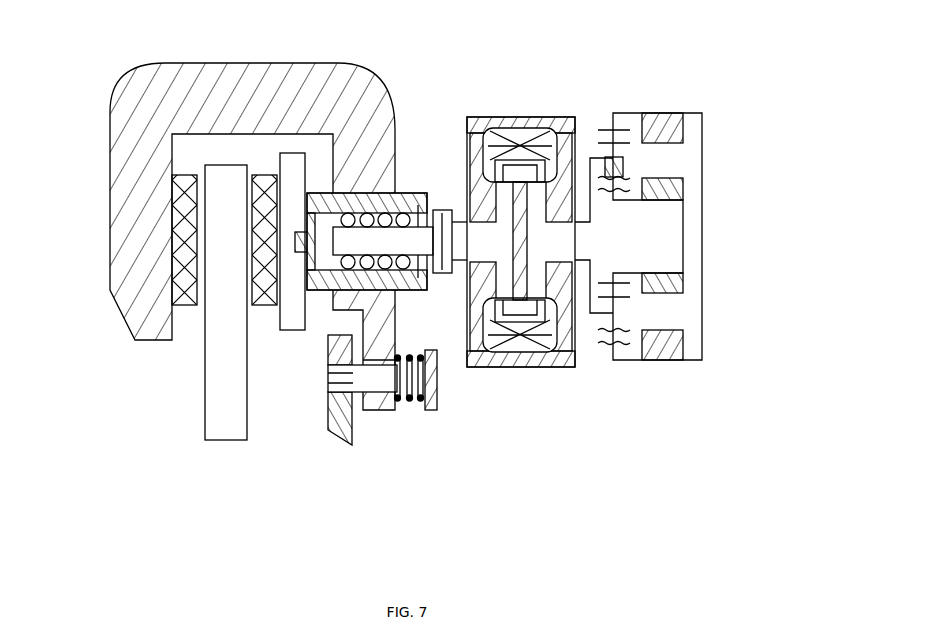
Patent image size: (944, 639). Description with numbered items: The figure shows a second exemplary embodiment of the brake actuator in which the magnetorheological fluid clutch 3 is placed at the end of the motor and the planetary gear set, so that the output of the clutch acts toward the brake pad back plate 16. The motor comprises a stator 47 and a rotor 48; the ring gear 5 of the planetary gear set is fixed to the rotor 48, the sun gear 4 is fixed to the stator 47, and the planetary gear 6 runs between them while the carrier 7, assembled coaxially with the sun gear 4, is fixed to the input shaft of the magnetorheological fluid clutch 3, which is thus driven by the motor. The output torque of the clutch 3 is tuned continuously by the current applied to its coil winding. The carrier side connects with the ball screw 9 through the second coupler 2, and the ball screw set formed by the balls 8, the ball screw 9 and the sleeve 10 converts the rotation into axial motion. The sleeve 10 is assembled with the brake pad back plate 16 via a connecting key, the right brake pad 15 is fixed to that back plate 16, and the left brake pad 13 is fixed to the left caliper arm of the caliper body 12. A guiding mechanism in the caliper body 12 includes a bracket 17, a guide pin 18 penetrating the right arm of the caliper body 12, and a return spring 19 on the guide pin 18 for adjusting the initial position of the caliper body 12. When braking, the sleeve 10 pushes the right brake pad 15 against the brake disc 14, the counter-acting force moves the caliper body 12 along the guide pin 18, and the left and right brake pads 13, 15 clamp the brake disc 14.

The coupler 2 is at (442, 205).
The magnetorheological fluid clutch 3 is at (510, 92).
The sun gear 4 is at (603, 128).
The ring gear 5 is at (638, 115).
The planetary gear 6 is at (614, 152).
The carrier 7 is at (590, 160).
The ball 8 is at (370, 149).
The ball screw 9 is at (372, 243).
The sleeve 10 is at (305, 230).
The caliper body 12 is at (128, 340).
The left brake pad 13 is at (180, 310).
The brake disc 14 is at (225, 398).
The right brake pad 15 is at (263, 305).
The brake pad back plate 16 is at (286, 290).
The bracket 17 is at (340, 402).
The guide pin 18 is at (378, 378).
The return spring 19 is at (423, 388).
The stator 47 is at (663, 193).
The rotor 48 is at (677, 135).